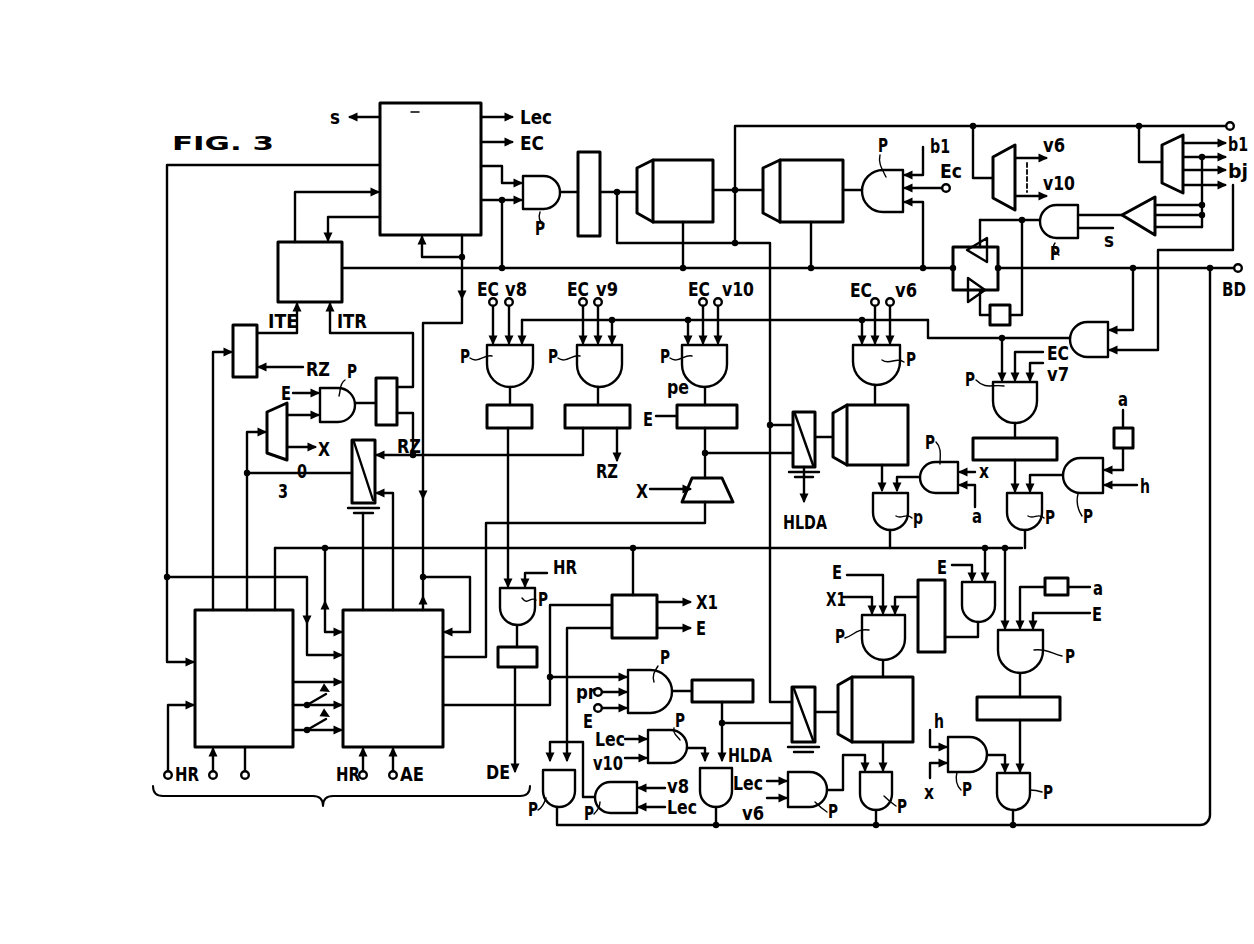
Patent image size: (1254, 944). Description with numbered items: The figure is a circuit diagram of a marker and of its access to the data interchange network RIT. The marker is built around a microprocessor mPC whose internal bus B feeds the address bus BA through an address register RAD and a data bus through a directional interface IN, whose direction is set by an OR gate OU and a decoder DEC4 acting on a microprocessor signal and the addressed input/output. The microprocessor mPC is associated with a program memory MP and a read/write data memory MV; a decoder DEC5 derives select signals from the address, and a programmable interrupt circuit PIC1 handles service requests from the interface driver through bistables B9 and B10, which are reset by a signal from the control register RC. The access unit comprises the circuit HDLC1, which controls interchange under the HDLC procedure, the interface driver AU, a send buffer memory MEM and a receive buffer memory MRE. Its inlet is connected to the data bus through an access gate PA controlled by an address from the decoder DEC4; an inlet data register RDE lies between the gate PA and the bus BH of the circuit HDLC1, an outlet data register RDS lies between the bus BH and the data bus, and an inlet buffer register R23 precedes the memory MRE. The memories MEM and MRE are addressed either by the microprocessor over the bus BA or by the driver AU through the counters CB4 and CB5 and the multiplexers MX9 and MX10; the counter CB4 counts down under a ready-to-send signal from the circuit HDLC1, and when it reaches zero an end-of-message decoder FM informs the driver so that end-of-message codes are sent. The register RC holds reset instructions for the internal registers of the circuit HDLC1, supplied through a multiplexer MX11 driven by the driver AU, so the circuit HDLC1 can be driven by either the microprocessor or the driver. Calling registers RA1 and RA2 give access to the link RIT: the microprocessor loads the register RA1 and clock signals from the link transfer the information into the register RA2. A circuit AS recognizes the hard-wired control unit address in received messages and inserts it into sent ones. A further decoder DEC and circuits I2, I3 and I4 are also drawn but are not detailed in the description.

The microprocessor mPC is at (380, 143).
The programmable interrupt circuit PIC1 is at (290, 268).
The address register RAD is at (590, 160).
The program memory MP is at (676, 170).
The read/write data memory MV is at (806, 175).
The decoder DEC5 is at (1002, 196).
The decoder DEC4 is at (1160, 180).
The output buffer OU is at (1162, 225).
The directional interface IN is at (968, 258).
The inverter I4 is at (1012, 320).
The access gate PA is at (1086, 328).
The internal bus B is at (578, 266).
The address bus BA is at (1218, 116).
The bistable B9 is at (238, 344).
The bistable B10 is at (386, 386).
The decoder DEC is at (272, 420).
The multiplexer MX11 is at (352, 498).
The calling register RA1 is at (492, 419).
The control register RC is at (616, 406).
The counter CB4 is at (724, 406).
The end of message decoder FM is at (715, 510).
The multiplexer MX9 is at (802, 416).
The send buffer memory MEM is at (902, 430).
The inlet data register RDE is at (1038, 446).
The inverter I2 is at (1132, 436).
The HDLC control circuit HDLC1 is at (270, 746).
The interface driver AU is at (431, 734).
The calling register RA2 is at (508, 666).
The data interchange network RIT is at (341, 806).
The bus of the HDLC circuit BH is at (306, 548).
The address recognition circuit AS is at (630, 604).
The counter CB5 is at (713, 686).
The multiplexer MX10 is at (802, 686).
The receive buffer memory MRE is at (898, 716).
The inlet buffer register R23 is at (935, 644).
The outlet data register RDS is at (1050, 709).
The inverter I3 is at (1052, 577).